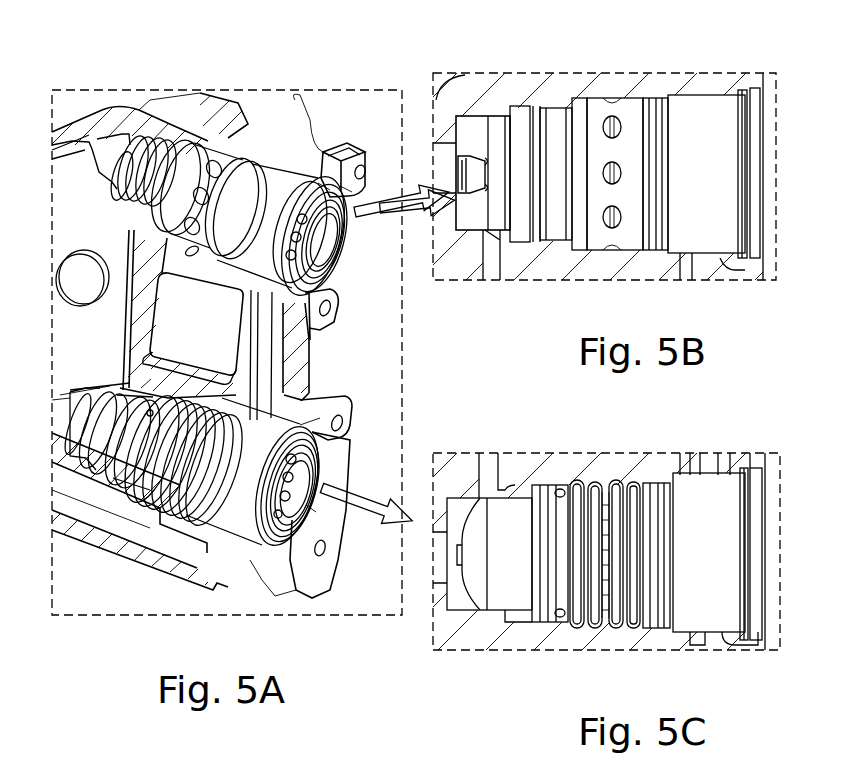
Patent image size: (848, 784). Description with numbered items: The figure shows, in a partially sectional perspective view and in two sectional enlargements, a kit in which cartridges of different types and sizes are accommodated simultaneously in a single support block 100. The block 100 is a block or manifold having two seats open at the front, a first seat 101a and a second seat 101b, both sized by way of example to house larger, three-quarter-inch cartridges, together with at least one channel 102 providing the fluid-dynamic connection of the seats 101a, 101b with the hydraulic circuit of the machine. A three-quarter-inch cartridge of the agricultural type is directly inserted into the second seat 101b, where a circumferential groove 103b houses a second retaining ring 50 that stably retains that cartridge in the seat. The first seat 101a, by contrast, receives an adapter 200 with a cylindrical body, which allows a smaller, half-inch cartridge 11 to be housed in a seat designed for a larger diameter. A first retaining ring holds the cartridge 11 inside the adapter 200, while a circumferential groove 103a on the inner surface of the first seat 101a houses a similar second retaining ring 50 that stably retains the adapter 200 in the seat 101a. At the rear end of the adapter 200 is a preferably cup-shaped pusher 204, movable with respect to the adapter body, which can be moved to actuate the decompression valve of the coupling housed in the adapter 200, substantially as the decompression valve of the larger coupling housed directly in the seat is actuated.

In FIG. 5A, the support block 100 is at (291, 88).
In FIG. 5A, the channel 102 is at (176, 116).
In FIG. 5A, the adapter 200 is at (283, 184).
In FIG. 5B, the adapter 200 is at (690, 90).
In FIG. 5A, the circumferential groove 103a is at (318, 178).
In FIG. 5A, the first seat 101a is at (345, 204).
In FIG. 5A, the circumferential groove 103b is at (322, 422).
In FIG. 5A, the second seat 101b is at (312, 510).
In FIG. 5A, the cartridge 11 is at (224, 512).
In FIG. 5C, the cartridge 11 is at (706, 612).
In FIG. 5B, the pusher 204 is at (470, 168).
In FIG. 5B, the second retaining ring 50 is at (745, 92).
In FIG. 5C, the second retaining ring 50 is at (748, 470).